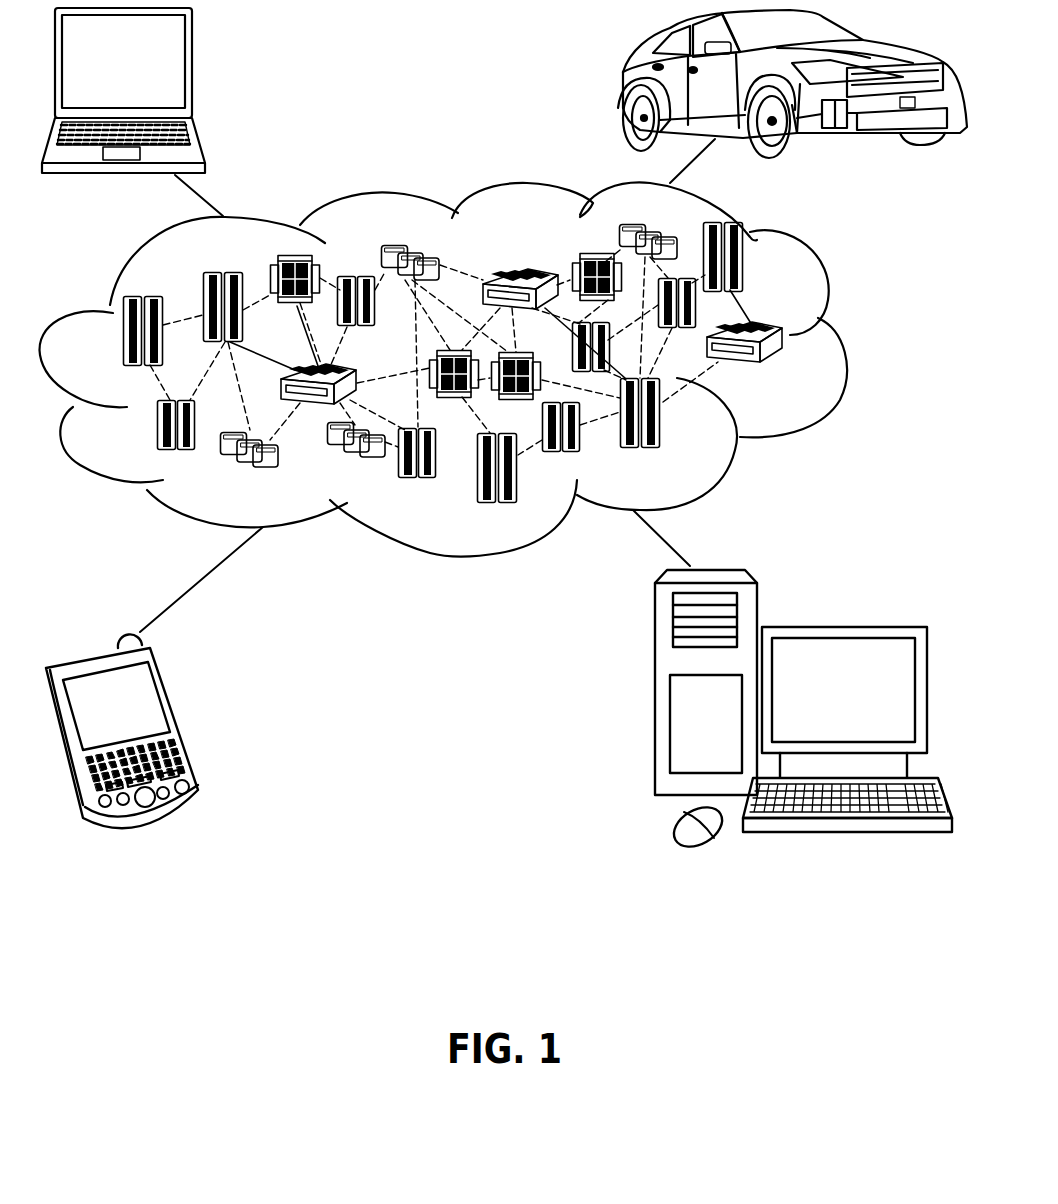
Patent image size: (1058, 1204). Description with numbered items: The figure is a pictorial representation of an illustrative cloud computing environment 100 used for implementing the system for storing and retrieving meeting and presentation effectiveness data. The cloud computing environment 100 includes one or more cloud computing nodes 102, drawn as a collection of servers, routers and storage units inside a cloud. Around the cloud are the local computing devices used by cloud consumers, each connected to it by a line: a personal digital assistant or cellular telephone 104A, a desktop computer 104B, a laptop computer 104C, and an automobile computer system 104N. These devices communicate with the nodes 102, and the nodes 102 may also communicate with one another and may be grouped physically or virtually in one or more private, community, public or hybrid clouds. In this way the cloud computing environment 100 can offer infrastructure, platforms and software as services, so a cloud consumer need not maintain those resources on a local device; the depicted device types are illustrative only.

The cloud computing environment 100 is at (840, 343).
The cloud computing nodes 102 is at (793, 373).
The personal digital assistant or cellular telephone 104A is at (182, 718).
The desktop computer 104B is at (840, 627).
The laptop computer 104C is at (192, 70).
The automobile computer system 104N is at (627, 86).